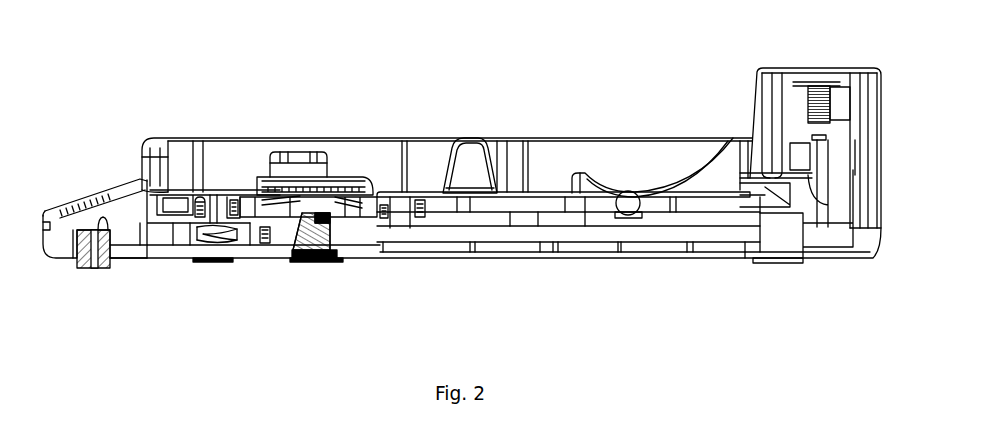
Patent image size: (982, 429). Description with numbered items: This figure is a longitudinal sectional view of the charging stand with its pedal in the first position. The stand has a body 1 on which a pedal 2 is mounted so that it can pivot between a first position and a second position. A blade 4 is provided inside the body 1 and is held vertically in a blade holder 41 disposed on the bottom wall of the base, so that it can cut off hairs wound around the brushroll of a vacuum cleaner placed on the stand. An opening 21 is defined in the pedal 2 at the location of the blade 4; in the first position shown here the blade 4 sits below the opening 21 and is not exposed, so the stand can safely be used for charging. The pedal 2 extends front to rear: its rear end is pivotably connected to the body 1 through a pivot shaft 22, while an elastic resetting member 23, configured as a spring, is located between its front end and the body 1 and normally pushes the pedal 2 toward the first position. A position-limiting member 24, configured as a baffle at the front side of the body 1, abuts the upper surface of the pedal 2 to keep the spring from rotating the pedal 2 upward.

The body 1 is at (150, 139).
The pedal 2 is at (527, 195).
The blade 4 is at (313, 212).
The opening 21 is at (308, 202).
The pivot shaft 22 is at (632, 208).
The elastic resetting member 23 is at (210, 242).
The position-limiting member 24 is at (157, 180).
The blade holder 41 is at (321, 215).